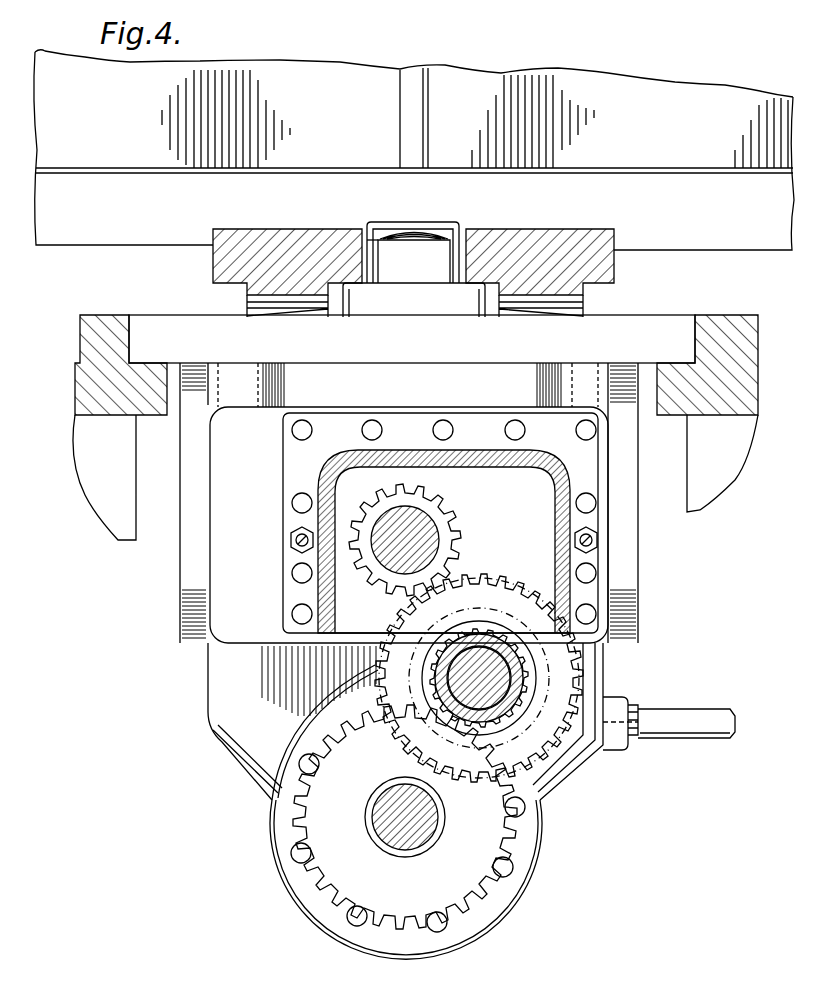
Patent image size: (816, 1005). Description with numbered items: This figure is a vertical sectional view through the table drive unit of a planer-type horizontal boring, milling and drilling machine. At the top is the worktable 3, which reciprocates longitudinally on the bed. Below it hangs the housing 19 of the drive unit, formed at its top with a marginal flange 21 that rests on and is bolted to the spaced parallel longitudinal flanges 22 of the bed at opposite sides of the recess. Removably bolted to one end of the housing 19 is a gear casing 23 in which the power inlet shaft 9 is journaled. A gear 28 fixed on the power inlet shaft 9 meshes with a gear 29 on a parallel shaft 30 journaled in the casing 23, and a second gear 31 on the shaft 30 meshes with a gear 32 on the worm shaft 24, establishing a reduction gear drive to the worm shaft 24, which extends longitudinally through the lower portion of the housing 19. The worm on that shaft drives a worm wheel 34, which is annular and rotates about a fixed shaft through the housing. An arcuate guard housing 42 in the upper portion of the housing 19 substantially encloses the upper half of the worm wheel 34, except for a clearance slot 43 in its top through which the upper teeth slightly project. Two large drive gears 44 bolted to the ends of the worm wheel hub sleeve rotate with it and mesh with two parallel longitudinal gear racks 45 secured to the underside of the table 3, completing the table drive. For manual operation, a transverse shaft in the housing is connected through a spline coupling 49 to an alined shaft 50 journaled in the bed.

The worktable 3 is at (725, 240).
The power inlet shaft 9 is at (394, 520).
The housing 19 is at (258, 766).
The marginal flange 21 is at (640, 327).
The longitudinal flanges 22 is at (676, 408).
The gear casing 23 is at (592, 475).
The worm shaft 24 is at (388, 836).
The gear 28 is at (458, 512).
The gear 29 is at (487, 583).
The parallel shaft 30 is at (512, 703).
The second gear 31 is at (520, 668).
The gear 32 is at (352, 892).
The worm wheel 34 is at (420, 233).
The guard housing 42 is at (447, 252).
The clearance slot 43 is at (381, 240).
The drive gears 44 is at (580, 312).
The gear racks 45 is at (614, 263).
The spline coupling 49 is at (617, 704).
The alined shaft 50 is at (677, 716).